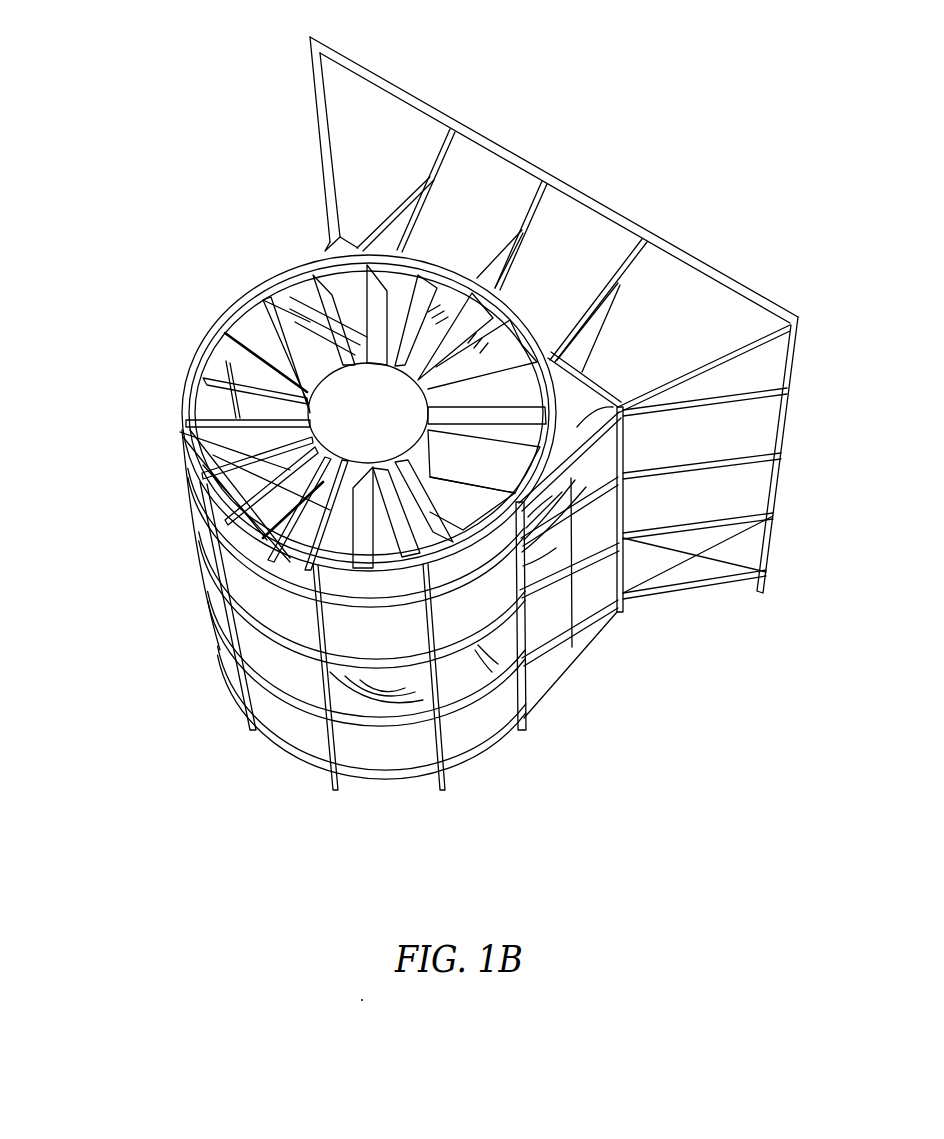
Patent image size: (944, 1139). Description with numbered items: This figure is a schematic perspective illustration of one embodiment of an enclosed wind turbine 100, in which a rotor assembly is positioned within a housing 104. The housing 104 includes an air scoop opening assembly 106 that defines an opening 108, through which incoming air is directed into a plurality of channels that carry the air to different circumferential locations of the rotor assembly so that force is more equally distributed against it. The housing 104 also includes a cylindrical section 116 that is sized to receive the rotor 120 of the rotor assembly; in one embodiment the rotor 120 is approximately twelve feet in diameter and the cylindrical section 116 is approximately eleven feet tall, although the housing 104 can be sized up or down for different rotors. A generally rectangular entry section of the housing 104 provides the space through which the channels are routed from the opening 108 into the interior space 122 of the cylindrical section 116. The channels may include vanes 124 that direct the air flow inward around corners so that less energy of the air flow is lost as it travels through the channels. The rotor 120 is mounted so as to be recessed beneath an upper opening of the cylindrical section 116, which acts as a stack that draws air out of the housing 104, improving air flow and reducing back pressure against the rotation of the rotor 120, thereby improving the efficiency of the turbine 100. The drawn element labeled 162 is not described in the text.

The wind turbine 100 is at (547, 50).
The housing 104 is at (176, 550).
The air scoop opening assembly 106 is at (688, 256).
The opening 108 is at (625, 410).
The cylindrical section 116 is at (387, 820).
The rotor 120 is at (270, 283).
The interior space 122 is at (211, 375).
The vanes 124 is at (222, 406).
The rotor shroud rim 162 is at (210, 308).